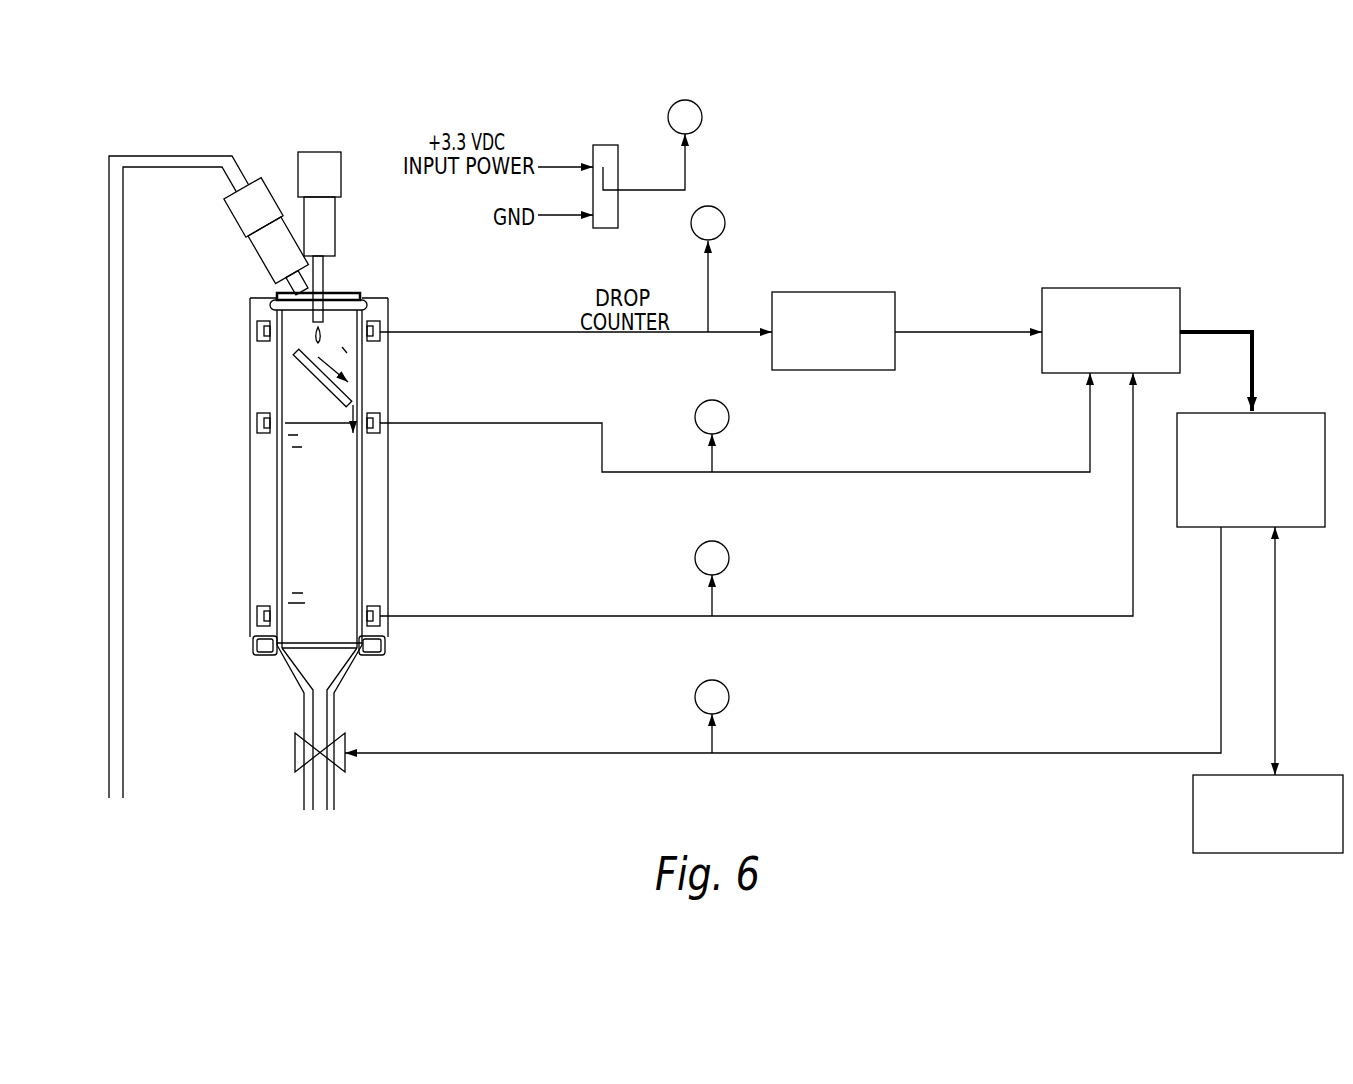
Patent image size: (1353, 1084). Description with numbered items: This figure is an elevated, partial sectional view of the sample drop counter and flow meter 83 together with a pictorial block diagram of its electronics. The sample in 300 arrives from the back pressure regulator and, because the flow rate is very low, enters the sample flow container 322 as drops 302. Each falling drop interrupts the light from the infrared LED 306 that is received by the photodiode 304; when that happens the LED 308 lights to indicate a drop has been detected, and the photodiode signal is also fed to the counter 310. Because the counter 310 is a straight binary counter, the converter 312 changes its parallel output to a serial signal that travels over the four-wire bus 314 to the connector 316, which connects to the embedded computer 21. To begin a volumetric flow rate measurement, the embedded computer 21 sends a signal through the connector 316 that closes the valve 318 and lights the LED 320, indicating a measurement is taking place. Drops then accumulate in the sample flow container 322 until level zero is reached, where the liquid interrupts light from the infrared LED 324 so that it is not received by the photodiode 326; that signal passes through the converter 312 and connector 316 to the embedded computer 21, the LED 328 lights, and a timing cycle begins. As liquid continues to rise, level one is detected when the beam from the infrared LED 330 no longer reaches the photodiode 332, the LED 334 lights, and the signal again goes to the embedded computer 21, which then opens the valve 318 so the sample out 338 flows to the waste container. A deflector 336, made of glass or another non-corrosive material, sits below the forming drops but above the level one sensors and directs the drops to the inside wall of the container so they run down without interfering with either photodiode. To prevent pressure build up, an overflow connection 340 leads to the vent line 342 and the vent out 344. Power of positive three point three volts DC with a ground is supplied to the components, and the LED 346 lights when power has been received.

The sample drop counter and flow meter 83 is at (378, 168).
The embedded computer 21 is at (1193, 812).
The sample in 300 is at (334, 183).
The drops 302 is at (327, 336).
The photodiode 304 is at (374, 320).
The infrared LED 306 is at (262, 320).
The LED 308 is at (694, 231).
The counter 310 is at (816, 292).
The converter 312 is at (1096, 288).
The four-wire bus 314 is at (1256, 367).
The connector 316 is at (1275, 413).
The valve 318 is at (346, 748).
The LED 320 is at (697, 688).
The sample flow container 322 is at (277, 522).
The infrared LED 324 is at (262, 605).
The photodiode 326 is at (374, 605).
The LED 328 is at (697, 547).
The infrared LED 330 is at (262, 412).
The photodiode 332 is at (374, 412).
The LED 334 is at (697, 405).
The deflector 336 is at (316, 374).
The sample out 338 is at (325, 838).
The overflow connection 340 is at (238, 218).
The vent line 342 is at (126, 463).
The vent out 344 is at (118, 842).
The LED 346 is at (669, 108).